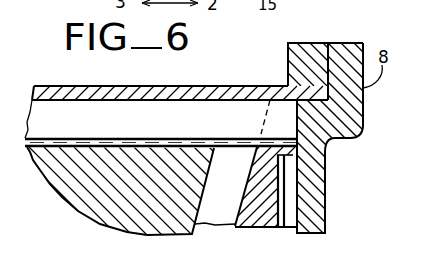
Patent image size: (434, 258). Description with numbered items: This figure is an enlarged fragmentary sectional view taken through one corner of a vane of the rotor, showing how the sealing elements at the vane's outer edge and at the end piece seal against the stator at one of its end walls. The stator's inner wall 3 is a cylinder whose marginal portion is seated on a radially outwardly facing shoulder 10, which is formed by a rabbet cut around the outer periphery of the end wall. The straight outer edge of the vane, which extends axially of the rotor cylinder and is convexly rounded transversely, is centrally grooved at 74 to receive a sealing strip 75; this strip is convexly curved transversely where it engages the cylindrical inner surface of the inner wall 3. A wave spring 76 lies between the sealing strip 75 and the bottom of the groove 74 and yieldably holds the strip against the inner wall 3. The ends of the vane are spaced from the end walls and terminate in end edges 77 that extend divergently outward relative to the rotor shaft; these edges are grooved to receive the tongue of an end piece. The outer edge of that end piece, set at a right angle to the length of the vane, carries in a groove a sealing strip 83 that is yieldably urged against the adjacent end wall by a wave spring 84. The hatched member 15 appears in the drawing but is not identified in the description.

The inner wall 3 is at (300, 46).
The shoulder 10 is at (313, 97).
The plate 15 is at (180, 93).
The groove 74 is at (82, 138).
The sealing strip 75 is at (66, 128).
The wave spring 76 is at (88, 146).
The end edges 77 is at (207, 189).
The sealing strip 83 is at (289, 201).
The wave spring 84 is at (272, 221).